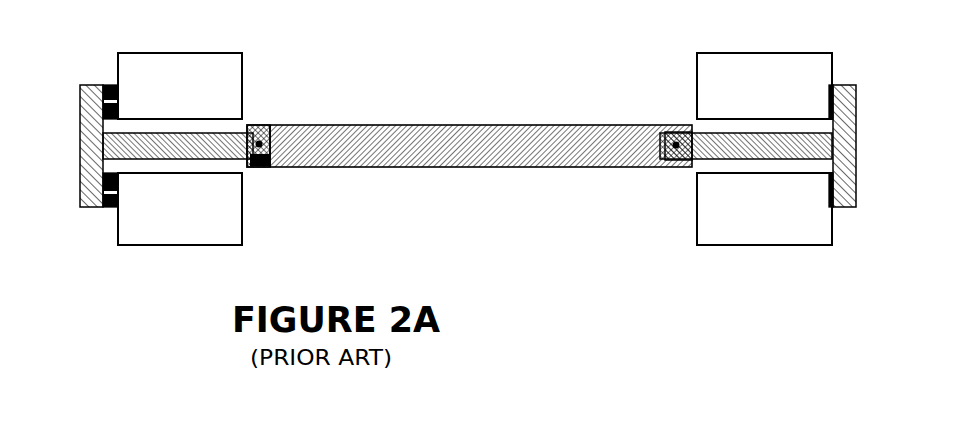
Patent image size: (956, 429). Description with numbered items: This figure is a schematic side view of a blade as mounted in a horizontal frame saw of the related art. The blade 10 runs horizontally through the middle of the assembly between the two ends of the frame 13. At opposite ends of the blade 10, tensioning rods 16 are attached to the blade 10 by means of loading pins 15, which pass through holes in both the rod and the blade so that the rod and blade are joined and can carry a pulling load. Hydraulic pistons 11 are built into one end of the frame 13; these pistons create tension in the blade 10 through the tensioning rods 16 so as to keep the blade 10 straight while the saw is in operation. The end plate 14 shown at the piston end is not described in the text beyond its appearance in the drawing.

The blade 10 is at (435, 155).
The hydraulic pistons 11 is at (112, 208).
The frame 13 is at (718, 208).
The end plate 14 is at (86, 85).
The loading pins 15 is at (285, 125).
The tensioning rods 16 is at (233, 160).